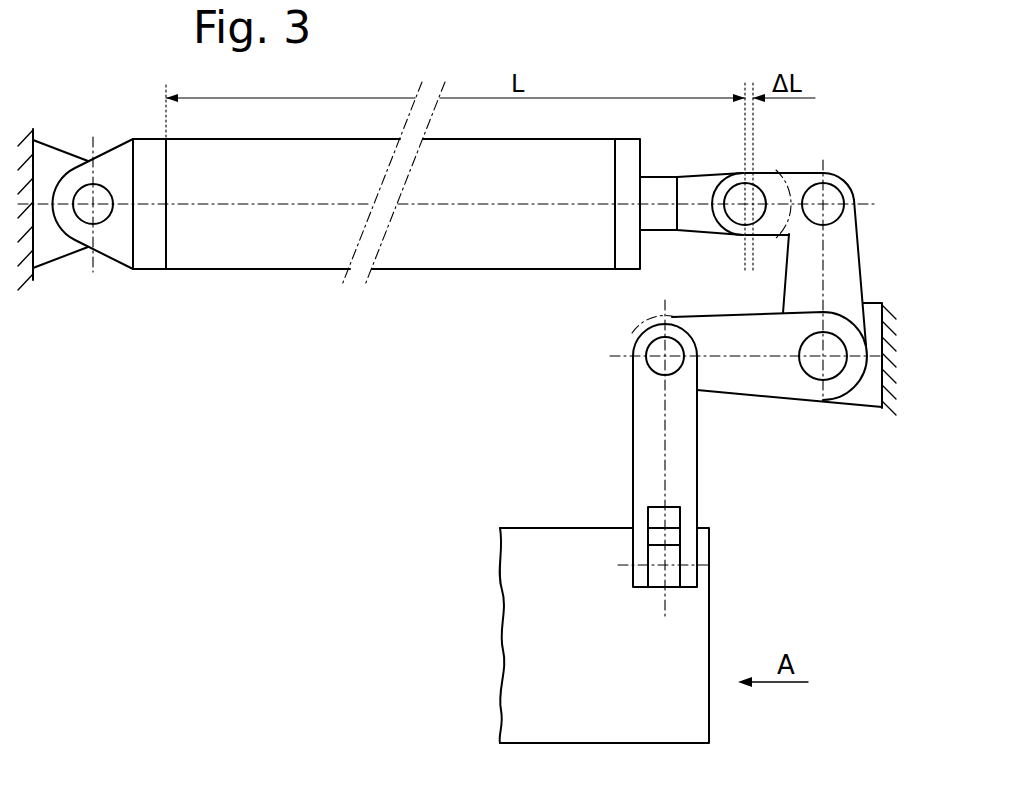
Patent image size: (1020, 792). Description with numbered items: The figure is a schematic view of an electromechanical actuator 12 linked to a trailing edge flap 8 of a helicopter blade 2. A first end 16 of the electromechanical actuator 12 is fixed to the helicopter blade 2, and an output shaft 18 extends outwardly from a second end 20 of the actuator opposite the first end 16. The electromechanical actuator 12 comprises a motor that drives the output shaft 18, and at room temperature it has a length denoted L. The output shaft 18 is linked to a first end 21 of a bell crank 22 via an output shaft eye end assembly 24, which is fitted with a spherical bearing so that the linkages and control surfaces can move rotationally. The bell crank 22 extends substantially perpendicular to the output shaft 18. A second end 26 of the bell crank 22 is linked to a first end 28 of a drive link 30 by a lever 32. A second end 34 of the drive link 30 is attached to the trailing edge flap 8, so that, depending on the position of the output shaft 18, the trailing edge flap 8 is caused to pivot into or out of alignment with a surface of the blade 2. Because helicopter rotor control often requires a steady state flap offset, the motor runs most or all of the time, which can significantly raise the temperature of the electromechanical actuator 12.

The helicopter blade 2 is at (33, 281).
The trailing edge flap 8 is at (692, 717).
The electromechanical actuator 12 is at (463, 252).
The first end 16 is at (115, 271).
The output shaft 18 is at (668, 177).
The second end 20 is at (625, 263).
The first end 21 is at (853, 193).
The bell crank 22 is at (843, 259).
The output shaft eye end assembly 24 is at (757, 172).
The second end 26 is at (803, 401).
The first end 28 is at (633, 357).
The drive link 30 is at (682, 480).
The lever 32 is at (727, 318).
The second end 34 is at (619, 550).